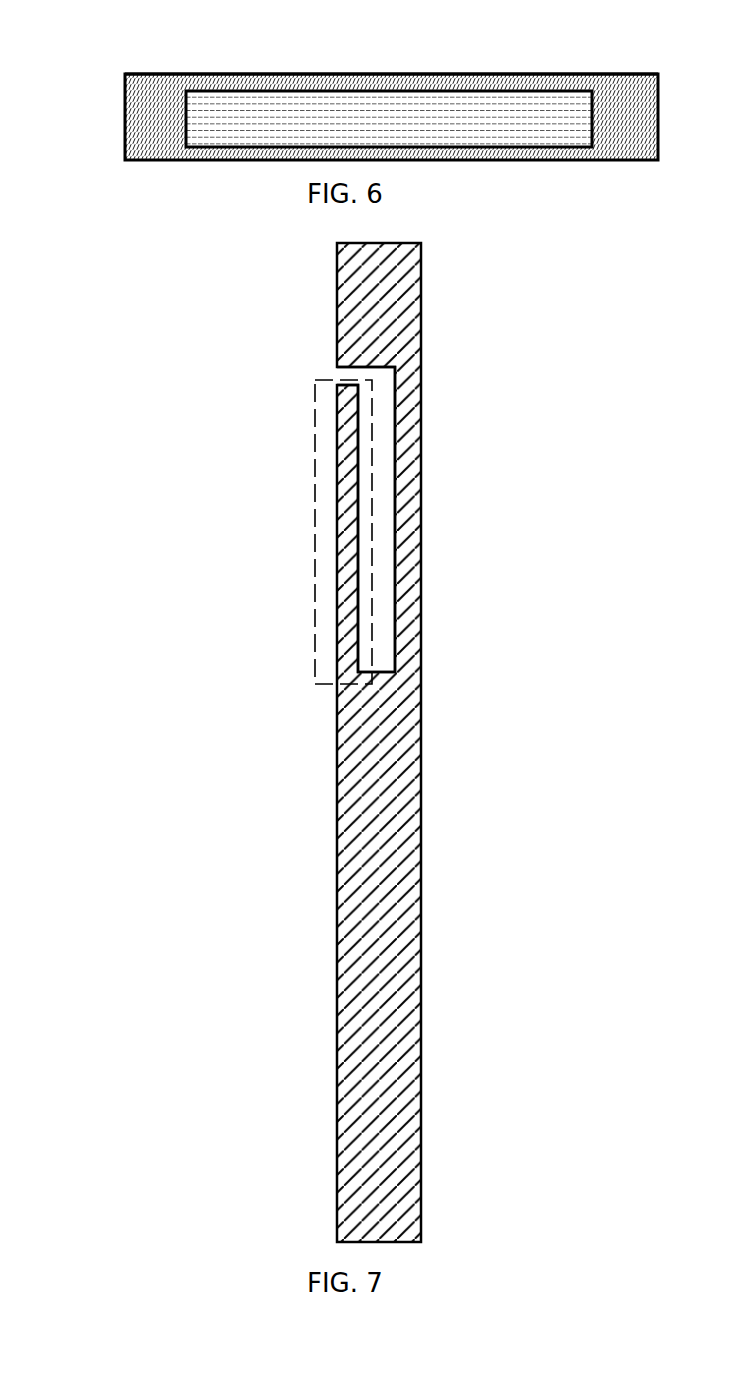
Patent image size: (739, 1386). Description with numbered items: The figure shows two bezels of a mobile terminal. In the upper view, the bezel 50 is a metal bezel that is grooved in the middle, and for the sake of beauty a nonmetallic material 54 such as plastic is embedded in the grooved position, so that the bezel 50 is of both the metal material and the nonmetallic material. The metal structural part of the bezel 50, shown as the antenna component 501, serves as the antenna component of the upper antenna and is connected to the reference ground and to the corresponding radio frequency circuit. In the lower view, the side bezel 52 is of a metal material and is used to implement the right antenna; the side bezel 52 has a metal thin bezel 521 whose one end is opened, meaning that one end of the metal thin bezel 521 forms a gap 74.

In FIG. 6, the bezel 50 is at (124, 117).
In FIG. 6, the antenna component 501 is at (302, 83).
In FIG. 6, the nonmetallic material 54 is at (515, 120).
In FIG. 7, the side bezel 52 is at (337, 880).
In FIG. 7, the metal thin bezel 521 is at (337, 593).
In FIG. 7, the gap 74 is at (336, 372).